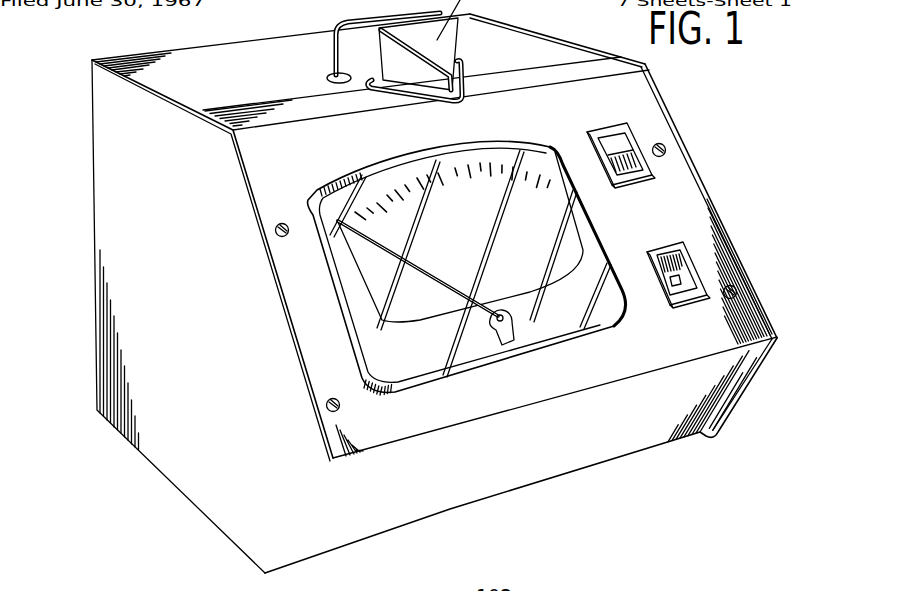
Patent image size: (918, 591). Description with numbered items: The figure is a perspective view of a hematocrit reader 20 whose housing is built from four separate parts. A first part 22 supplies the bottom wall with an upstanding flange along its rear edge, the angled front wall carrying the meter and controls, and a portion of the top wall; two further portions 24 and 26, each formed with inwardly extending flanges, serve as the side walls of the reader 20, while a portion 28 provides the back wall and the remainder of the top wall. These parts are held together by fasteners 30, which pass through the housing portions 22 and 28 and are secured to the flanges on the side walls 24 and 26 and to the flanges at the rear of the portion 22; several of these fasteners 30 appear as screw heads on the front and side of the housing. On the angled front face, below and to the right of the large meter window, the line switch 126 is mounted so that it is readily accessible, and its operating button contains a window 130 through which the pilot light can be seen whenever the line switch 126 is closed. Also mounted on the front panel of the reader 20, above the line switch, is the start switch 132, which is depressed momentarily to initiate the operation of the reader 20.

The hematocrit reader 20 is at (156, 478).
The housing part 22 is at (633, 435).
The side wall portion 24 is at (660, 107).
The side wall portion 26 is at (113, 133).
The back wall portion 28 is at (199, 63).
The fasteners 30 is at (663, 155).
The line switch 126 is at (693, 292).
The window 130 is at (668, 278).
The start switch 132 is at (632, 139).